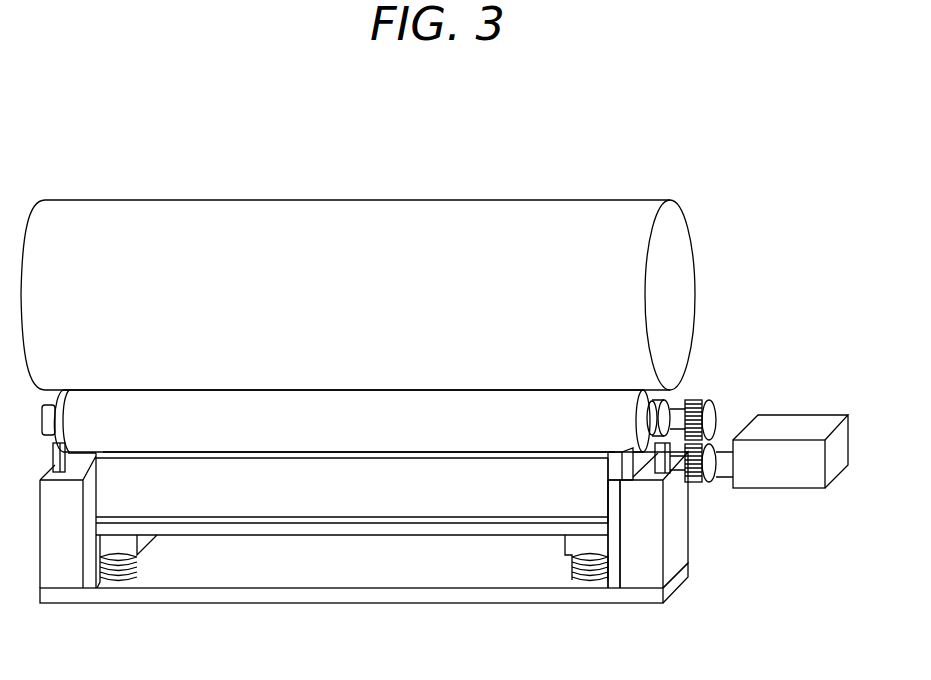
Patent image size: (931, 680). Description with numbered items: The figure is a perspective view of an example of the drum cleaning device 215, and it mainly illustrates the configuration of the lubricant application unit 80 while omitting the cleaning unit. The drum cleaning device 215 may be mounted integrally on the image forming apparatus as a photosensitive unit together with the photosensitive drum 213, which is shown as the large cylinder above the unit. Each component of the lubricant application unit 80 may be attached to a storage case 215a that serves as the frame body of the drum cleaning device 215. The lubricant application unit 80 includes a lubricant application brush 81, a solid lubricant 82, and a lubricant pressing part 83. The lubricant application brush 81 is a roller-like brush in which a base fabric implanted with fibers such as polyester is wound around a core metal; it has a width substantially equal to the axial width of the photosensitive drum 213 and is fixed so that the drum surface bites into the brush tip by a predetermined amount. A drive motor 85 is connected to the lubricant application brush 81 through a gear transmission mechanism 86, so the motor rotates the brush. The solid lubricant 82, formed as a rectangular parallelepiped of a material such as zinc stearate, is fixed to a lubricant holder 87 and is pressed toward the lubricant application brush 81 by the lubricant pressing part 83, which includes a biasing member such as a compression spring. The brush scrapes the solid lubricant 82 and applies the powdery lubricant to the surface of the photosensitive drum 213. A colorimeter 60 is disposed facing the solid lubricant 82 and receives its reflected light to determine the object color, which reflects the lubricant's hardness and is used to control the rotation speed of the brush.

The photosensitive drum 213 is at (289, 218).
The lubricant application brush 81 is at (230, 425).
The solid lubricant 82 is at (365, 490).
The lubricant holder 87 is at (470, 521).
The lubricant pressing part 83 is at (573, 553).
The storage case 215a is at (648, 572).
The colorimeter 60 is at (640, 470).
The gear transmission mechanism 86 is at (715, 410).
The drive motor 85 is at (797, 430).
The lubricant application unit 80 is at (720, 592).
The drum cleaning device 215 is at (424, 561).